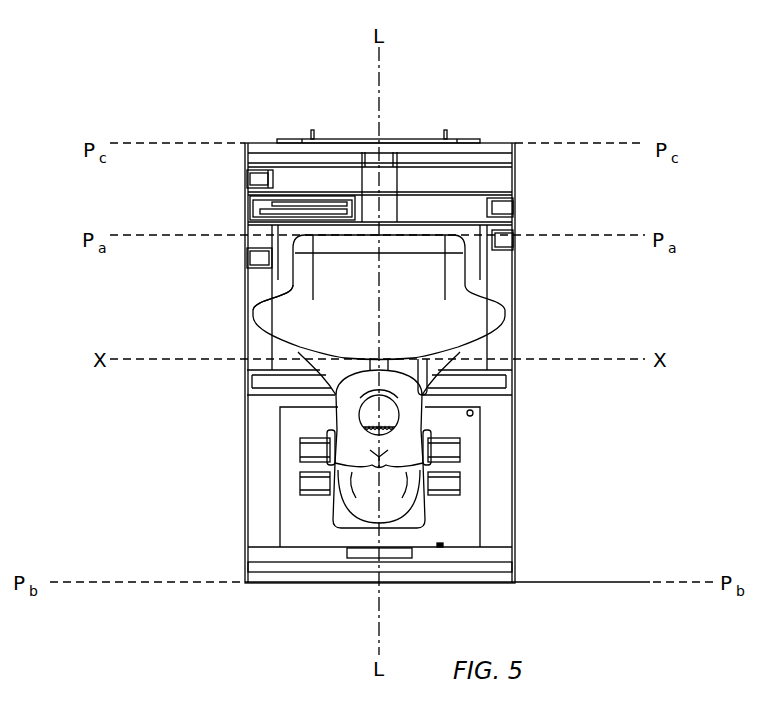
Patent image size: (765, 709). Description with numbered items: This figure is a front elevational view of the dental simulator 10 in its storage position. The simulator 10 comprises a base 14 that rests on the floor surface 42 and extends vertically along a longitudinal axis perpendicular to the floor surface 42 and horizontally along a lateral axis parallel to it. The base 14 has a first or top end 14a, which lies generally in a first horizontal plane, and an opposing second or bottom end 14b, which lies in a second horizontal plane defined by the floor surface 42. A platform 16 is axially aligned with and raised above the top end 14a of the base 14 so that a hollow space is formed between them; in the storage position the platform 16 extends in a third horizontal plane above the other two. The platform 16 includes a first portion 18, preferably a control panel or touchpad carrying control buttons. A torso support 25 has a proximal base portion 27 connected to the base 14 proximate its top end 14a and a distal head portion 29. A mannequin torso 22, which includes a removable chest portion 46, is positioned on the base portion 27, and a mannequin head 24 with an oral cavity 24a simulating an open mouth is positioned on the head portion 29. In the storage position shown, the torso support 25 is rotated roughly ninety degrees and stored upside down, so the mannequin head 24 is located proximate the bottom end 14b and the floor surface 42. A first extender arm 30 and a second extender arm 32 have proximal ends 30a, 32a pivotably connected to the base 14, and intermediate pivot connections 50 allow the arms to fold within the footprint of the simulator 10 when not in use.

The simulator 10 is at (281, 73).
The base 14 is at (516, 327).
The first or top end of the base 14a is at (513, 227).
The second or bottom end of the base 14b is at (515, 580).
The platform 16 is at (292, 137).
The first portion of the platform (control panel) 18 is at (430, 140).
The mannequin torso 22 is at (332, 303).
The mannequin head 24 is at (345, 425).
The oral cavity 24a is at (390, 412).
The torso support 25 is at (340, 513).
The proximal base portion of the torso support 27 is at (283, 287).
The distal head portion of the torso support 29 is at (432, 517).
The first extender arm 30 is at (455, 207).
The first proximal end of the first extender arm 30a is at (390, 210).
The second extender arm 32 is at (297, 180).
The first proximal end of the second extender arm 32a is at (363, 178).
The floor surface 42 is at (615, 582).
The chest portion 46 is at (437, 292).
The intermediate pivot connection 50 is at (255, 180).